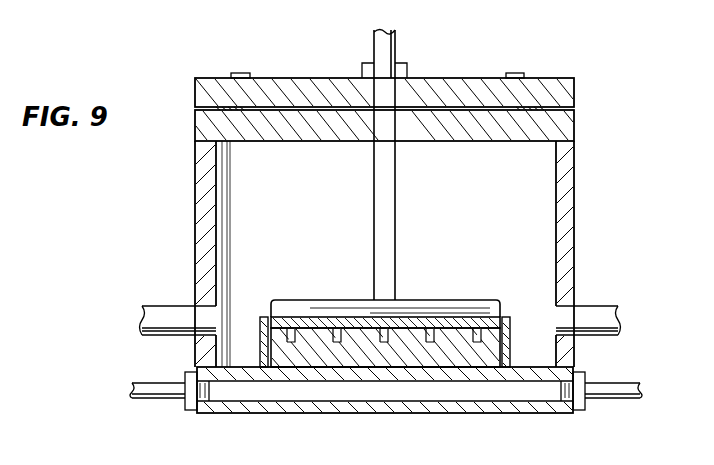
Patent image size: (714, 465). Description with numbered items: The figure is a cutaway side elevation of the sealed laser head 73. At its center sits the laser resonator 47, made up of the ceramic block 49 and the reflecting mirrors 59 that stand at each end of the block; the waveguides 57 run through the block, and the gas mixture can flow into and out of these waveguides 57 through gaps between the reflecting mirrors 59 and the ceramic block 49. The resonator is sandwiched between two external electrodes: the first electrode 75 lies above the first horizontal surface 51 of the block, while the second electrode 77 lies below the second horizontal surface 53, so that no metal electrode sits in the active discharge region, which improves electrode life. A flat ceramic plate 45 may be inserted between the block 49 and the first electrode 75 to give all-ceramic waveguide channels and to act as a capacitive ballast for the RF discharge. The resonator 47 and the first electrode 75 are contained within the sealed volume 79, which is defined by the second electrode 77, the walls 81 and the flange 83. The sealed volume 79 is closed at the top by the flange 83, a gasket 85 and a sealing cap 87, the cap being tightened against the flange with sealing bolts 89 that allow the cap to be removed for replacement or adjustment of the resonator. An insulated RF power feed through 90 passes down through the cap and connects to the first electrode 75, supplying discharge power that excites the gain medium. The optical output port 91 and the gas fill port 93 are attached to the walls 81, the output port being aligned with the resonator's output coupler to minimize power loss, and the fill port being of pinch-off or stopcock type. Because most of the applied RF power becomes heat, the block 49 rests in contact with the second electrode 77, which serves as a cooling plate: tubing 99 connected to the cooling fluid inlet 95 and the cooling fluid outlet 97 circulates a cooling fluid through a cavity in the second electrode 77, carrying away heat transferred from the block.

The flat ceramic plate 45 is at (413, 318).
The laser resonator 47 is at (513, 318).
The ceramic block 49 is at (470, 367).
The first horizontal surface 51 is at (482, 330).
The second horizontal surface 53 is at (416, 375).
The waveguides 57 is at (337, 330).
The reflecting mirrors 59 is at (265, 368).
The sealed laser head 73 is at (612, 240).
The first electrode 75 is at (440, 302).
The second electrode 77 is at (325, 413).
The sealed volume 79 is at (523, 163).
The walls 81 is at (197, 214).
The flange 83 is at (560, 123).
The gasket 85 is at (537, 106).
The sealing cap 87 is at (565, 90).
The sealing bolts 89 is at (515, 73).
The insulated RF power feed through 90 is at (396, 42).
The optical output port 91 is at (612, 307).
The gas fill port 93 is at (155, 312).
The cooling fluid inlet 95 is at (186, 410).
The cooling fluid outlet 97 is at (563, 400).
The tubing 99 is at (155, 394).